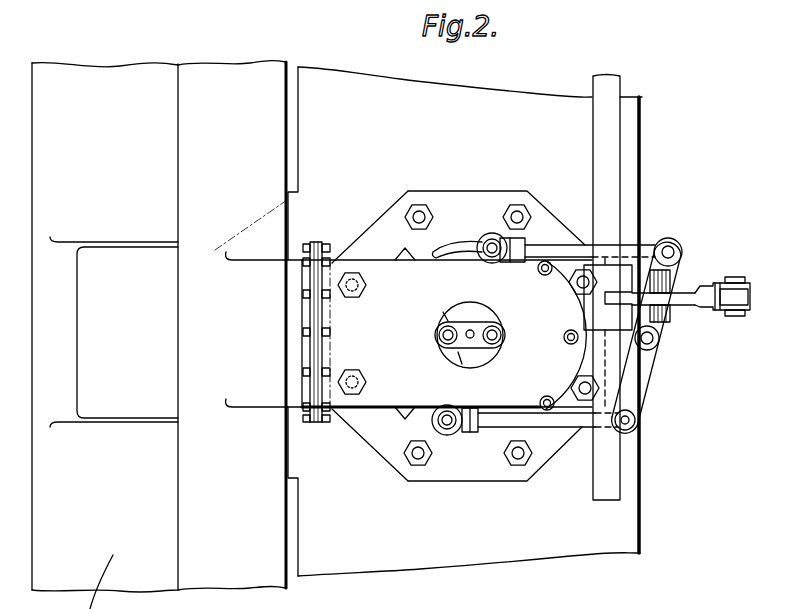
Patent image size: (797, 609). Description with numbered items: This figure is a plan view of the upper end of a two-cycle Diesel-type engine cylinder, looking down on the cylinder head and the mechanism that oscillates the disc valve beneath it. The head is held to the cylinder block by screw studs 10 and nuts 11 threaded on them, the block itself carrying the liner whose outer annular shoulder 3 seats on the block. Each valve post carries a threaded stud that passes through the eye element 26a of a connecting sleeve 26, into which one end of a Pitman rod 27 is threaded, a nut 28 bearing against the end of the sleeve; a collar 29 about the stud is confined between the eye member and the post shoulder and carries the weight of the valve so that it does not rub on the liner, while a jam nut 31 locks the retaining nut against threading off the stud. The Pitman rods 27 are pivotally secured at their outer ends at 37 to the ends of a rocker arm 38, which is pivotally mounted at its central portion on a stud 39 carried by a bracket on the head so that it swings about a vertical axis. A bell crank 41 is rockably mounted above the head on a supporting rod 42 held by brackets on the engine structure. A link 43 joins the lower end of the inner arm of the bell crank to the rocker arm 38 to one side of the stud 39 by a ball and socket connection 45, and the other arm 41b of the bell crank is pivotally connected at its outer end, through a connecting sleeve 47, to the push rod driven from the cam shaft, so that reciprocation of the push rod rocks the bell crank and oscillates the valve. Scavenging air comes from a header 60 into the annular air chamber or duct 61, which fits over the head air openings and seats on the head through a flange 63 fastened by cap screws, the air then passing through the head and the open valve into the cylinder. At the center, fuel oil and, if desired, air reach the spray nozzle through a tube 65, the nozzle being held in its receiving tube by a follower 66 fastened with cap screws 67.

The outer annular shoulder 3 is at (558, 160).
The screw studs 10 is at (405, 197).
The nuts 11 is at (422, 204).
The connecting sleeve 26 is at (508, 238).
The eye element 26a is at (482, 240).
The Pitman rod 27 is at (560, 412).
The nut 28 is at (476, 432).
The collar 29 is at (480, 256).
The jam nut 31 is at (494, 235).
The pivot connection 37 is at (676, 247).
The rocker arm 38 is at (640, 382).
The stud 39 is at (660, 336).
The bell crank 41 is at (692, 309).
The other arm of the bell crank 41b is at (692, 292).
The supporting rod 42 is at (613, 467).
The link 43 is at (650, 265).
The ball and socket connection 45 is at (666, 310).
The connecting sleeve 47 is at (733, 293).
The header 60 is at (218, 588).
The annular air chamber or duct 61 is at (537, 427).
The flange 63 is at (585, 265).
The tube 65 is at (473, 330).
The follower 66 is at (480, 352).
The cap screws 67 is at (438, 336).